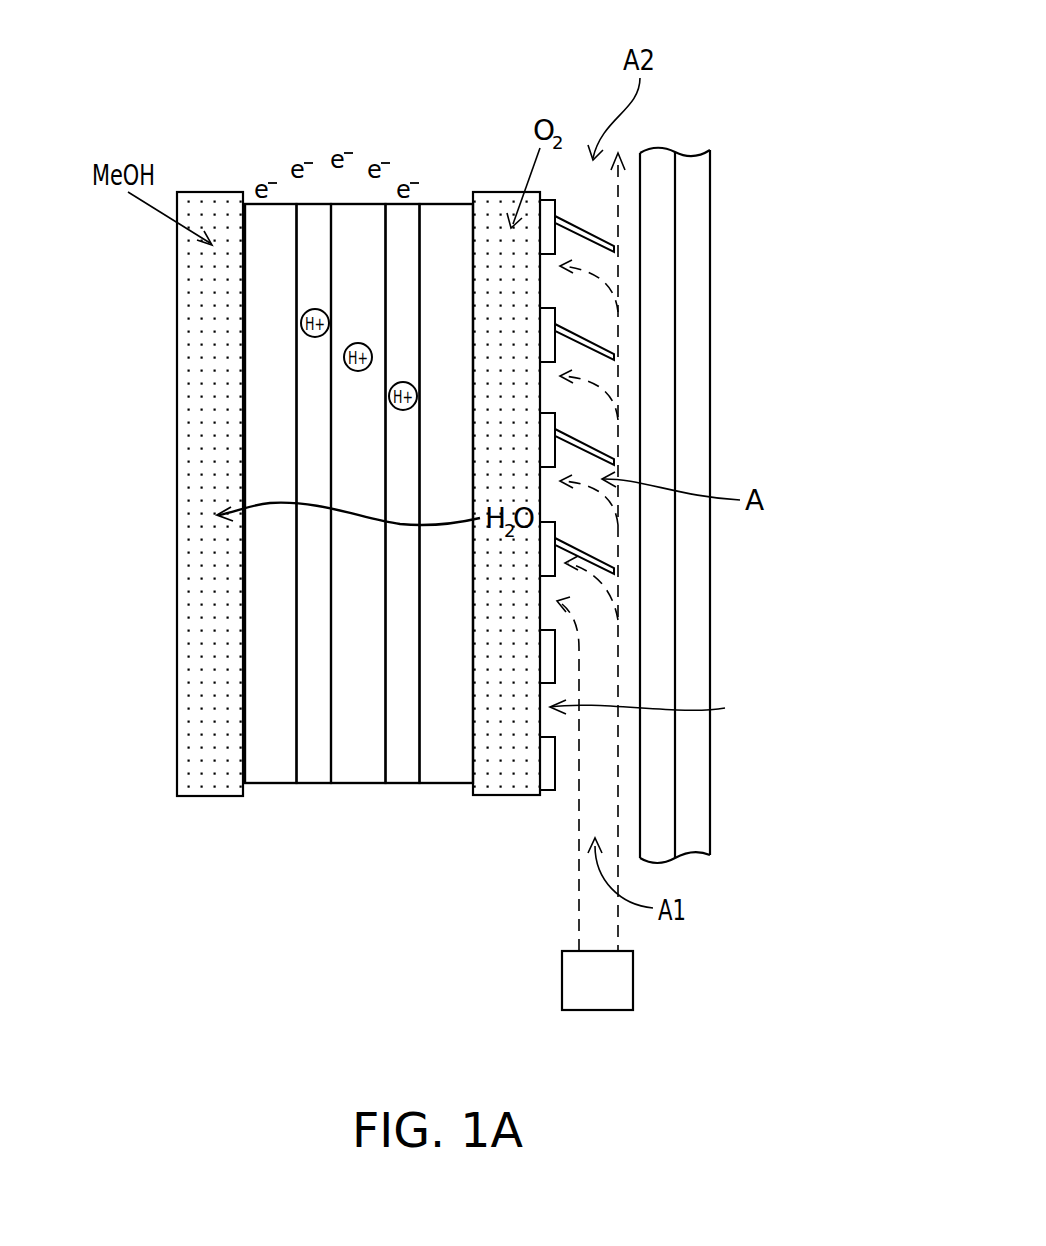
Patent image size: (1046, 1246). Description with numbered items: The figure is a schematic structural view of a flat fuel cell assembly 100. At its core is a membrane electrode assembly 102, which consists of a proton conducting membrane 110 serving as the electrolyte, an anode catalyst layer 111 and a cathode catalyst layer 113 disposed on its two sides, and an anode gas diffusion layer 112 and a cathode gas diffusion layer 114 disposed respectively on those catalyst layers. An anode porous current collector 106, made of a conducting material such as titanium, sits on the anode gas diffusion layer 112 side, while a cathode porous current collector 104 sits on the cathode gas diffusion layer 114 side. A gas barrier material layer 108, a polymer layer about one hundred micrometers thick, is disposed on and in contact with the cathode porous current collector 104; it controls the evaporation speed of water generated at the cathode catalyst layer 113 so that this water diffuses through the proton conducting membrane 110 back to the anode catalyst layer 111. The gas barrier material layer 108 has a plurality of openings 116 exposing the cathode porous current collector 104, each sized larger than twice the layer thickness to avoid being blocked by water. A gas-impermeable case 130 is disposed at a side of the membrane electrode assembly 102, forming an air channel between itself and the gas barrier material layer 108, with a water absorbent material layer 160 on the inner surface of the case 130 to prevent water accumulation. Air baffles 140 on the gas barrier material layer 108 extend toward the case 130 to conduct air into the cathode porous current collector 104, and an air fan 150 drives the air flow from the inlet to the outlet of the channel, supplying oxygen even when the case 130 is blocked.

The flat fuel cell assembly 100 is at (482, 105).
The membrane electrode assembly 102 is at (468, 145).
The cathode porous current collector 104 is at (493, 797).
The anode porous current collector 106 is at (203, 797).
The gas barrier material layer 108 is at (548, 791).
The proton conducting membrane 110 is at (353, 775).
The anode catalyst layer 111 is at (312, 777).
The anode gas diffusion layer 112 is at (267, 777).
The cathode catalyst layer 113 is at (395, 775).
The cathode gas diffusion layer 114 is at (450, 765).
The opening 116 is at (660, 706).
The case 130 is at (717, 505).
The air baffle 140 is at (593, 230).
The air fan 150 is at (618, 995).
The water absorbent material layer 160 is at (660, 602).